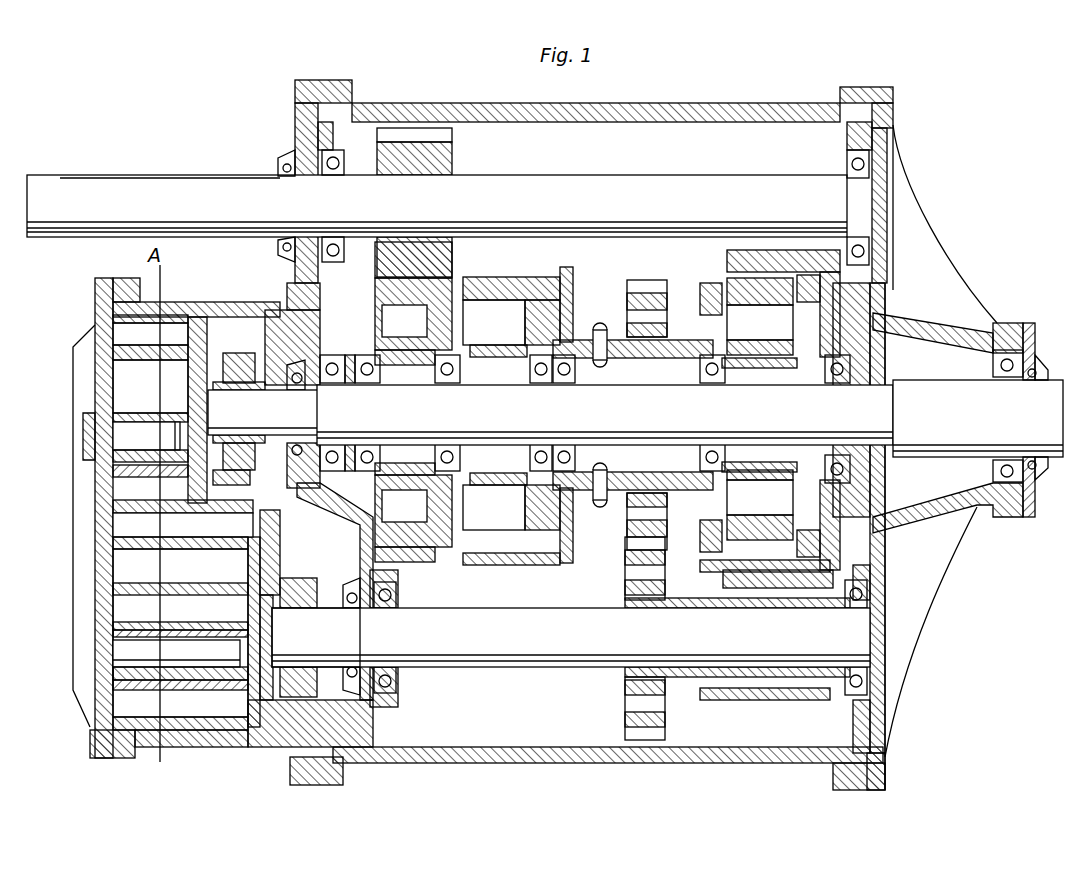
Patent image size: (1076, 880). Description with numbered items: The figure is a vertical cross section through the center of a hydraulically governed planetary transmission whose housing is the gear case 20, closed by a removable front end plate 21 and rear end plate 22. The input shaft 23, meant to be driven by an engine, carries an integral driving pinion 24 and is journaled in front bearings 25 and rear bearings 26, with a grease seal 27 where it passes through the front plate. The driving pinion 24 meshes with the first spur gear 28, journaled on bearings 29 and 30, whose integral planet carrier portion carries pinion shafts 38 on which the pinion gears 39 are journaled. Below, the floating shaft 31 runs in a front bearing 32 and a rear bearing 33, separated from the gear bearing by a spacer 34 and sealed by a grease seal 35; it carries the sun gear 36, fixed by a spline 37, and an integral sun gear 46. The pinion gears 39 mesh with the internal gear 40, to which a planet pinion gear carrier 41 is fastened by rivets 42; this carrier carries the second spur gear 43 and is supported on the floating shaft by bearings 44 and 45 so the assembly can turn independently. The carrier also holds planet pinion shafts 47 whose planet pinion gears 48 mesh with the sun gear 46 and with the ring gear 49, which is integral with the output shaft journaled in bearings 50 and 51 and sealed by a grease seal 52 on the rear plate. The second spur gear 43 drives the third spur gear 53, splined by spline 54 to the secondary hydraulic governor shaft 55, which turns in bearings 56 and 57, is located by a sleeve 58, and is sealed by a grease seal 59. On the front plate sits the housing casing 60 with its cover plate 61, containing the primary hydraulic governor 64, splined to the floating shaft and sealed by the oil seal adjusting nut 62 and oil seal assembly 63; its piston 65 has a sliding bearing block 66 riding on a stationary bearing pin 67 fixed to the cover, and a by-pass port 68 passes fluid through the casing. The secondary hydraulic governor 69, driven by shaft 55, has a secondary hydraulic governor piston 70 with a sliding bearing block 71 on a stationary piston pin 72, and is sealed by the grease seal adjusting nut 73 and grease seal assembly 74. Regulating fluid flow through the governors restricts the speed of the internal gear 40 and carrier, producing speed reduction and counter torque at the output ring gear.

The gear case 20 is at (498, 104).
The front end plate 21 is at (295, 95).
The rear end plate 22 is at (896, 138).
The input shaft 23 is at (145, 192).
The driving pinion 24 is at (452, 150).
The front bearings 25 is at (345, 152).
The rear bearings 26 is at (845, 165).
The grease seal 27 is at (284, 158).
The first spur gear 28 is at (534, 300).
The bearing 29 is at (372, 372).
The bearing 30 is at (440, 375).
The floating shaft 31 is at (652, 378).
The front bearing 32 is at (332, 355).
The bearing 33 is at (828, 372).
The spacer 34 is at (362, 357).
The grease seal 35 is at (295, 370).
The sun gear 36 is at (532, 372).
The spline 37 is at (565, 372).
The pinion shafts 38 is at (511, 415).
The pinion gears 39 is at (487, 290).
The internal gear 40 is at (516, 268).
The planet pinion gear carrier 41 is at (705, 300).
The rivets 42 is at (600, 328).
The second spur gear 43 is at (648, 282).
The bearing 44 is at (580, 372).
The bearing 45 is at (715, 372).
The sun gear 46 is at (762, 372).
The planet pinion shafts 47 is at (773, 416).
The planet pinion gears 48 is at (762, 258).
The ring gear 49 is at (998, 419).
The bearing 50 is at (895, 330).
The bearing 51 is at (990, 366).
The grease seal 52 is at (1040, 360).
The third spur gear 53 is at (665, 576).
The spline 54 is at (660, 606).
The secondary hydraulic governor shaft 55 is at (548, 669).
The bearing 56 is at (400, 585).
The bearing 57 is at (842, 690).
The sleeve 58 is at (750, 678).
The grease seal 59 is at (350, 582).
The housing casing 60 is at (232, 302).
The cover plate 61 is at (82, 332).
The oil seal adjusting nut 62 is at (250, 352).
The oil seal assembly 63 is at (235, 380).
The primary hydraulic governor 64 is at (195, 302).
The piston 65 is at (125, 363).
The sliding bearing block 66 is at (140, 413).
The stationary bearing pin 67 is at (130, 437).
The by-pass port 68 is at (125, 520).
The secondary hydraulic governor 69 is at (214, 566).
The secondary hydraulic governor piston 70 is at (125, 584).
The sliding bearing block 71 is at (135, 622).
The stationary piston pin 72 is at (120, 668).
The grease seal adjusting nut 73 is at (305, 578).
The grease seal assembly 74 is at (295, 608).